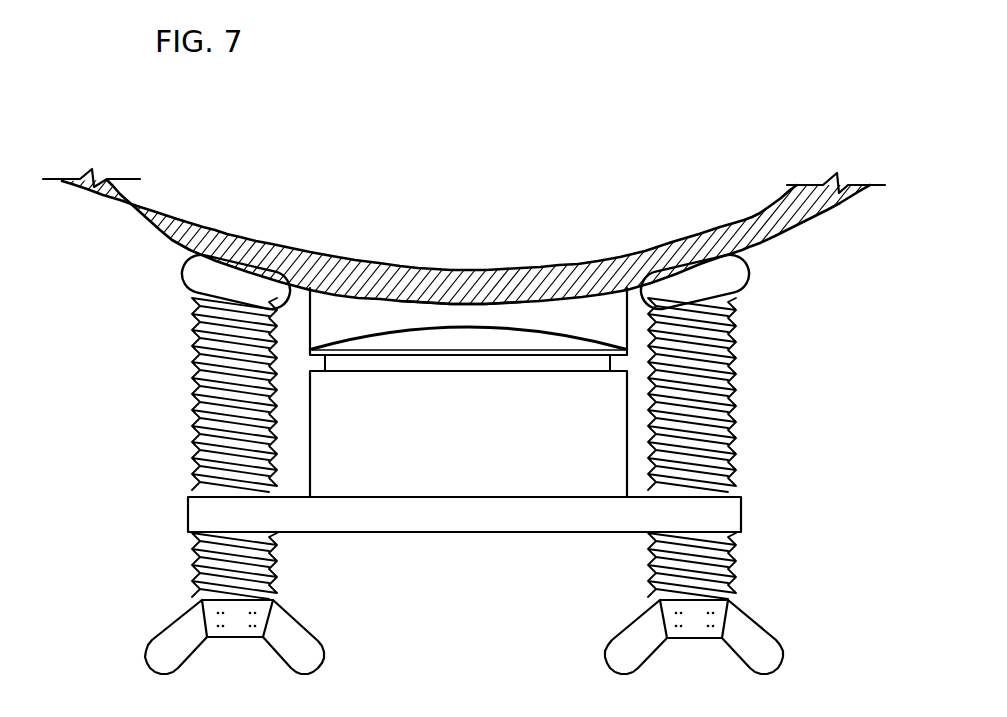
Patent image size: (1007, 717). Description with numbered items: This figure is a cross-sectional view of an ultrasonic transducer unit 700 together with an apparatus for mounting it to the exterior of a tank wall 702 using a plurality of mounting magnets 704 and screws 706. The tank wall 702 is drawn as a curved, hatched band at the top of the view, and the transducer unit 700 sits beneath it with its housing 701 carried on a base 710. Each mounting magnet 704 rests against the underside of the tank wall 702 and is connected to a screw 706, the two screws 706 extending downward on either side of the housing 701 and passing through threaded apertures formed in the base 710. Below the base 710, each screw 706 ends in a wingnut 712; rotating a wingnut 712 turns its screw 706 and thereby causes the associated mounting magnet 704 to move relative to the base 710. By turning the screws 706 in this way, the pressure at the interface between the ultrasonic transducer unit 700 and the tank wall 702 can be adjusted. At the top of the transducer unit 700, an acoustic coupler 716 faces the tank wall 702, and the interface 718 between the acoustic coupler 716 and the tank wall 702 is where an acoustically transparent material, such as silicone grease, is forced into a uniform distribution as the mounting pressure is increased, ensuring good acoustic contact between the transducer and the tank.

The ultrasonic transducer unit 700 is at (58, 370).
The camera body 701 is at (486, 447).
The tank wall 702 is at (136, 226).
The mounting magnet 704 is at (180, 266).
The screw 706 is at (192, 394).
The base 710 is at (187, 516).
The wingnut 712 is at (168, 673).
The acoustic coupler 716 is at (380, 320).
The interface 718 is at (460, 302).